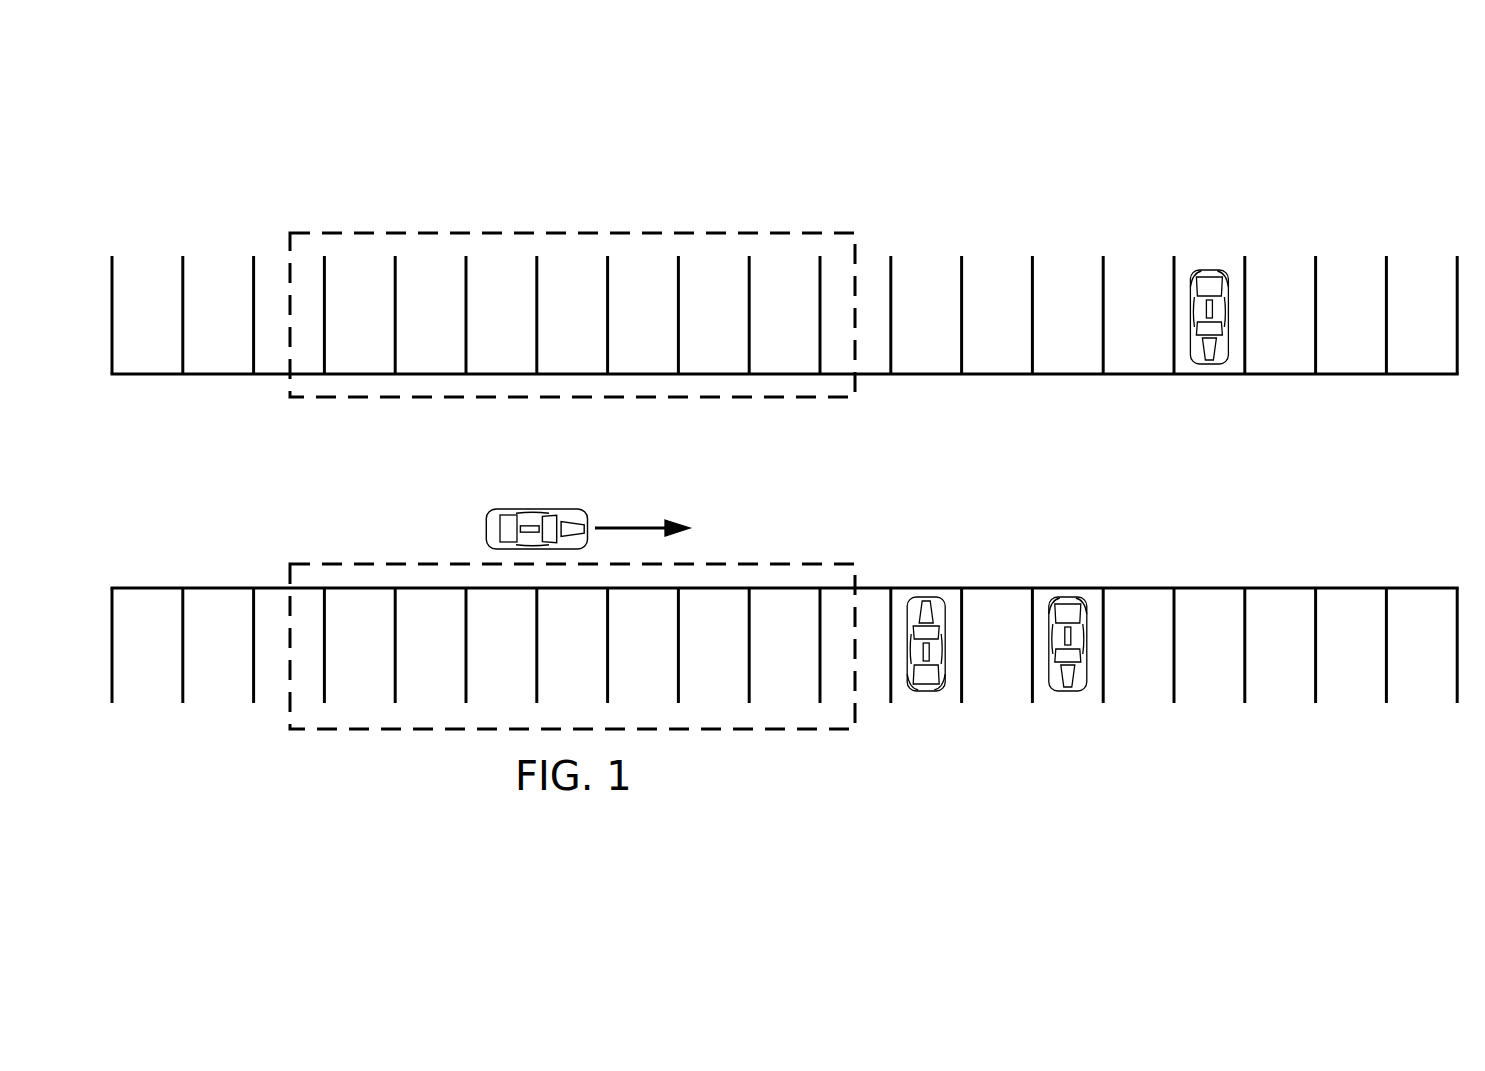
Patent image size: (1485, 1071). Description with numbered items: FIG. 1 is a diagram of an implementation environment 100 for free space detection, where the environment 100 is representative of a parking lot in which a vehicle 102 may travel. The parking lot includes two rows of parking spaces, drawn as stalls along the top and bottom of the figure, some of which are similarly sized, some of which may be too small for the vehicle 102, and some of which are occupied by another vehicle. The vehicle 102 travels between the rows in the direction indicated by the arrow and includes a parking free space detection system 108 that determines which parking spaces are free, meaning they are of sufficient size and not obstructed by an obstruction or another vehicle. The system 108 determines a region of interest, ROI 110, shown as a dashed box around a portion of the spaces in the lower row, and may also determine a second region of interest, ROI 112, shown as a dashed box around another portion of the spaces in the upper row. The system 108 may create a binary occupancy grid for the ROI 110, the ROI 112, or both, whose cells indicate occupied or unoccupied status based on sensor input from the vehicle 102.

The implementation environment 100 is at (520, 99).
The vehicle 102 is at (557, 499).
The parking free space detection (PFSD) system 108 is at (504, 528).
The ROI 110 is at (431, 738).
The ROI 112 is at (571, 224).